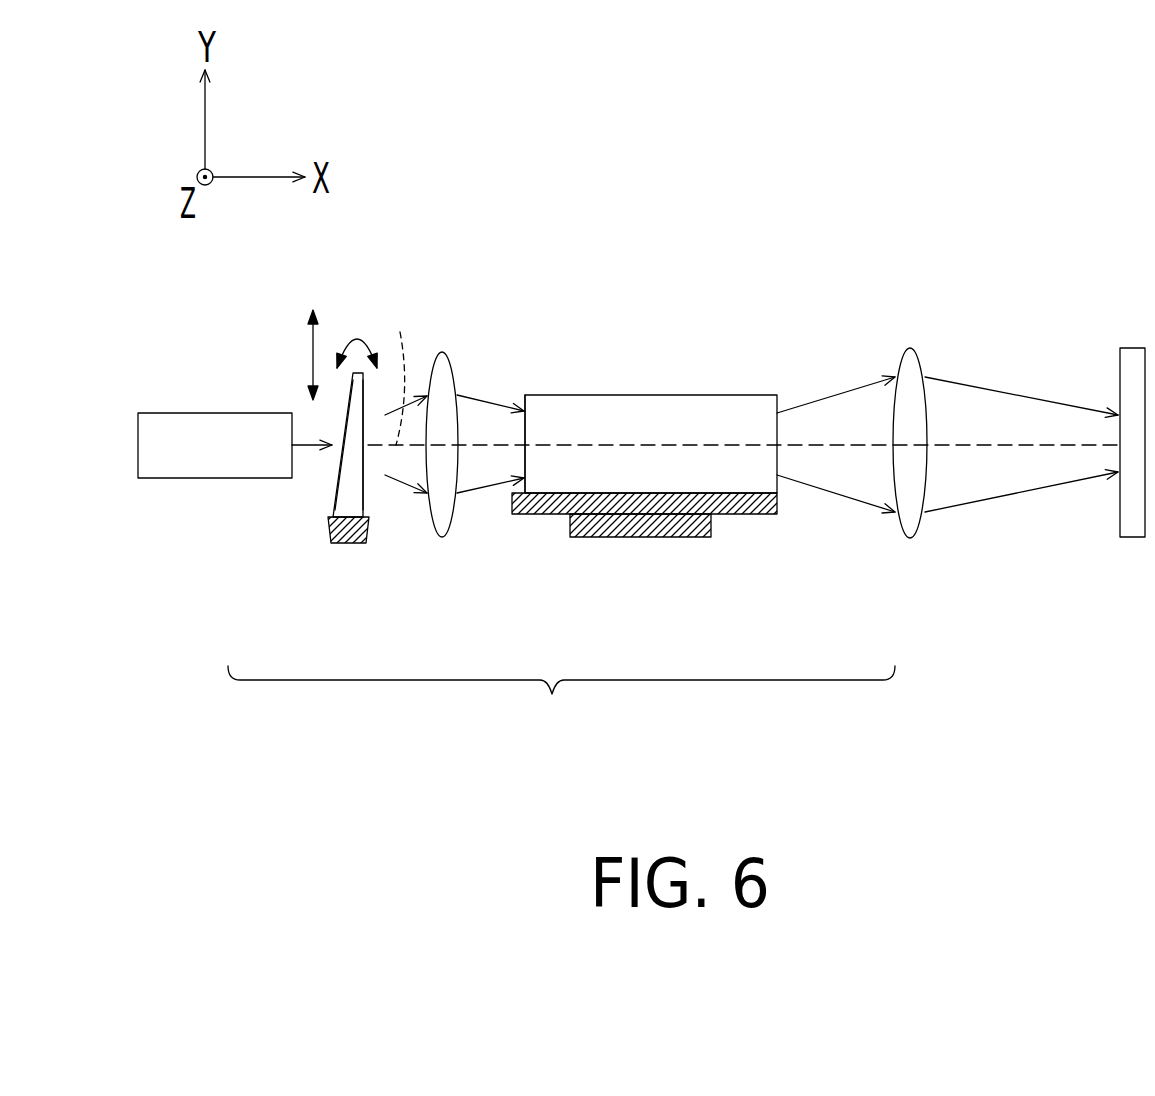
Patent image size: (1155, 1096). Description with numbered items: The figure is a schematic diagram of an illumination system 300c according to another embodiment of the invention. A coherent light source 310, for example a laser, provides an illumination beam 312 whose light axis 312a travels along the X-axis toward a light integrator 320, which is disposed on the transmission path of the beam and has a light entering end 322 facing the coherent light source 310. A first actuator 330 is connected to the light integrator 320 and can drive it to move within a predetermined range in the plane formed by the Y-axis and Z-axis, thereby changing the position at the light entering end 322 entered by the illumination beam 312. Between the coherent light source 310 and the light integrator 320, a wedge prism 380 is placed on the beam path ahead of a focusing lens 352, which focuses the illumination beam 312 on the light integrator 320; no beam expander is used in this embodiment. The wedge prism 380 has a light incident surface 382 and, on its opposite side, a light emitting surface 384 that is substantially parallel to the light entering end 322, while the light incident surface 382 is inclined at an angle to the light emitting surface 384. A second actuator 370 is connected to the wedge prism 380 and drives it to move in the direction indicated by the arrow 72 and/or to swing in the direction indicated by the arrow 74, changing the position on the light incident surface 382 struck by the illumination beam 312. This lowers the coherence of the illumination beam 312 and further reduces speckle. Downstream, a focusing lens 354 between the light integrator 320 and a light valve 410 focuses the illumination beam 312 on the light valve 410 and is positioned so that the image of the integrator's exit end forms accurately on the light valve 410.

The coherent light source 310 is at (228, 478).
The illumination beam 312 is at (303, 441).
The light axis 312a is at (405, 366).
The arrow 72 is at (312, 367).
The arrow 74 is at (355, 337).
The wedge prism 380 is at (335, 495).
The light incident surface 382 is at (337, 476).
The light emitting surface 384 is at (365, 483).
The second actuator 370 is at (369, 528).
The focusing lens 352 is at (452, 523).
The light integrator 320 is at (619, 477).
The light entering end 322 is at (523, 394).
The first actuator 330 is at (760, 514).
The focusing lens 354 is at (905, 538).
The light valve 410 is at (1132, 537).
The illumination system 300c is at (561, 705).